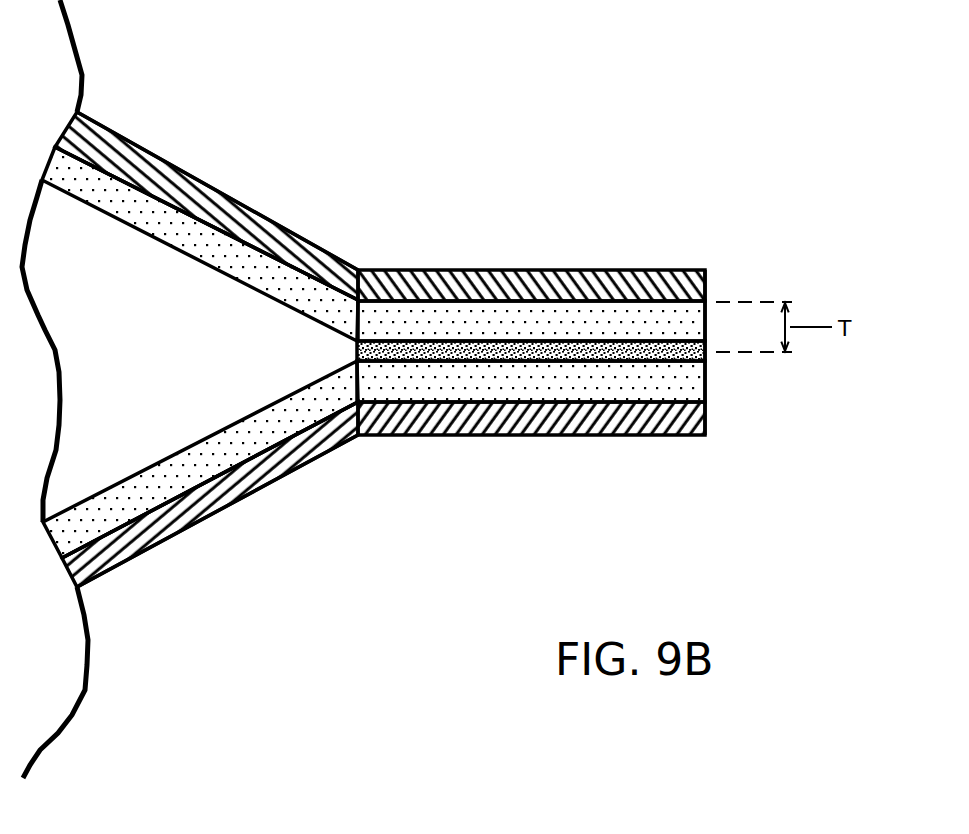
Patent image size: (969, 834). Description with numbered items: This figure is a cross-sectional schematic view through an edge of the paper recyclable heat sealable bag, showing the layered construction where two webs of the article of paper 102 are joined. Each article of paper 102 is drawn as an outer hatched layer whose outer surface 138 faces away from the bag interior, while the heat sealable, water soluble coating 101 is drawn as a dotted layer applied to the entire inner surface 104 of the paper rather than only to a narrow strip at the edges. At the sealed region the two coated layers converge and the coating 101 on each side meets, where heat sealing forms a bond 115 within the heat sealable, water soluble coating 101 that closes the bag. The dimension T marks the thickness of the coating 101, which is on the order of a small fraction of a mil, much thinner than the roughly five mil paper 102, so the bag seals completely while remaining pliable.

The heat sealable, water soluble coating 101 is at (97, 208).
The article of paper 102 is at (258, 208).
The inner surface 104 is at (190, 213).
The bond 115 is at (705, 357).
The outer surface 138 is at (153, 157).